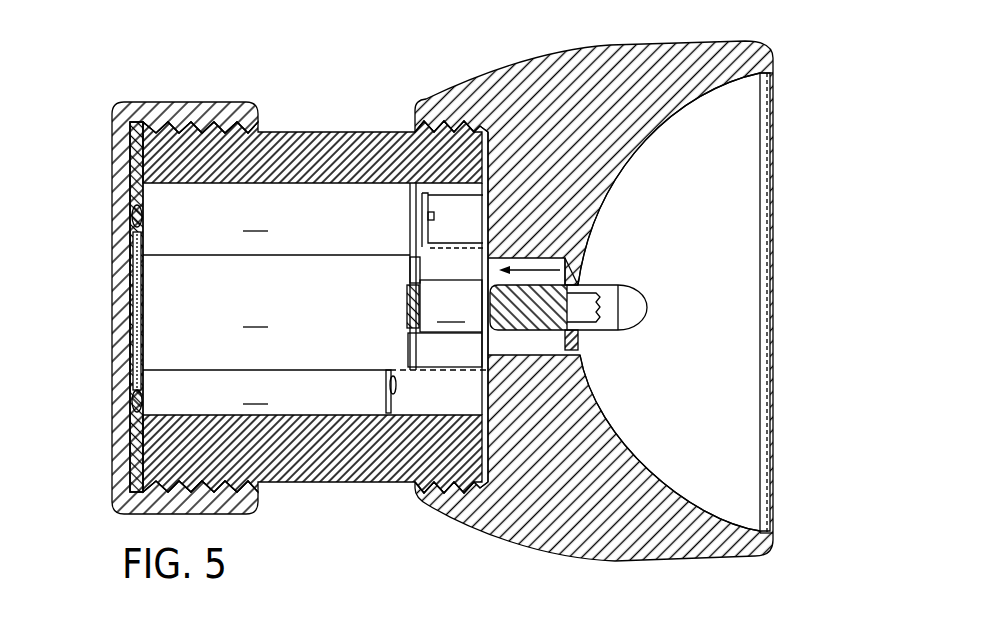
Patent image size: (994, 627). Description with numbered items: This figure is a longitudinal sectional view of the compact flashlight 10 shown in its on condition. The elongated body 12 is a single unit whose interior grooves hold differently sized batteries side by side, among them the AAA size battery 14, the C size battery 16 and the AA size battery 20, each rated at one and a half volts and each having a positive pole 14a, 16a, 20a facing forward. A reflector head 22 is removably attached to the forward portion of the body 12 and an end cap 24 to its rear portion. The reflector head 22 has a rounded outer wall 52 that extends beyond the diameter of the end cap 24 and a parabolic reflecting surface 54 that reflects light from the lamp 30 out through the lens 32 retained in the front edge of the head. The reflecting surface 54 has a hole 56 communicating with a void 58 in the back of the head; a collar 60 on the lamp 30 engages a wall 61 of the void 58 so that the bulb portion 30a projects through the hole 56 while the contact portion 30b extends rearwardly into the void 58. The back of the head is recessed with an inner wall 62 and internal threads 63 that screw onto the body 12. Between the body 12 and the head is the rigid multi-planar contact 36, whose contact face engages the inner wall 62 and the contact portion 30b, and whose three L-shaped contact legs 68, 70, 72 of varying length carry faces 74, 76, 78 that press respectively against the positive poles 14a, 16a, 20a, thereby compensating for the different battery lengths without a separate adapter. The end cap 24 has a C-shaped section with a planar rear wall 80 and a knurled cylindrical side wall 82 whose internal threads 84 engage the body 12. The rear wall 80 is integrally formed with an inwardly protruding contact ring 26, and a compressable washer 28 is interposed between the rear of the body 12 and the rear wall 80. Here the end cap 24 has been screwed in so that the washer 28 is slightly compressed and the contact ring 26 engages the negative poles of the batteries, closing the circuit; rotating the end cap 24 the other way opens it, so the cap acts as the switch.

The compact flashlight 10 is at (820, 123).
The elongated body 12 is at (331, 133).
The battery 14 is at (255, 391).
The positive pole 14a is at (383, 395).
The battery 16 is at (315, 313).
The positive pole 16a is at (407, 305).
The battery 20 is at (279, 276).
The positive pole 20a is at (415, 222).
The reflector head 22 is at (680, 43).
The end cap 24 is at (146, 100).
The contact ring 26 is at (143, 215).
The compressable washer 28 is at (113, 181).
The lamp 30 is at (659, 305).
The bulb portion 30a is at (640, 320).
The contact portion 30b is at (580, 338).
The lens 32 is at (774, 297).
The multi-planar contact 36 is at (583, 232).
The outer wall 52 is at (590, 42).
The parabolic reflecting surface 54 is at (642, 143).
The hole 56 is at (576, 282).
The void 58 is at (525, 347).
The collar 60 is at (583, 243).
The wall 61 is at (580, 352).
The inner wall 62 is at (467, 197).
The internal threads 63 is at (460, 122).
The contact leg 68 is at (470, 377).
The contact leg 70 is at (451, 306).
The contact leg 72 is at (457, 250).
The face 74 is at (400, 368).
The face 76 is at (415, 330).
The face 78 is at (427, 217).
The planar rear wall 80 is at (112, 307).
The cylindrical side wall 82 is at (165, 100).
The internal threads 84 is at (215, 100).